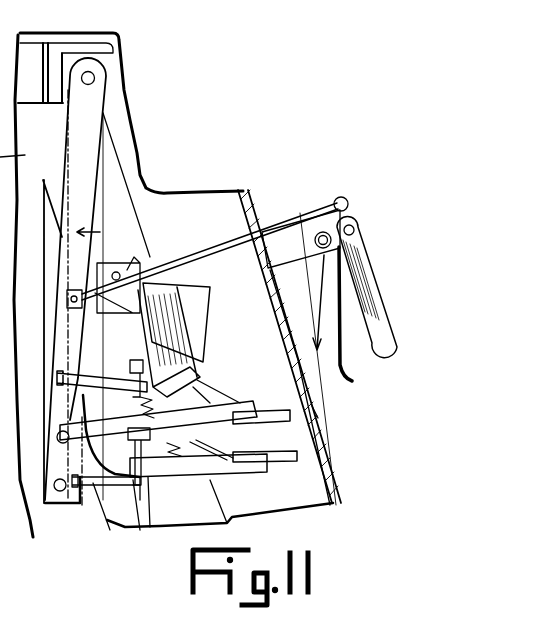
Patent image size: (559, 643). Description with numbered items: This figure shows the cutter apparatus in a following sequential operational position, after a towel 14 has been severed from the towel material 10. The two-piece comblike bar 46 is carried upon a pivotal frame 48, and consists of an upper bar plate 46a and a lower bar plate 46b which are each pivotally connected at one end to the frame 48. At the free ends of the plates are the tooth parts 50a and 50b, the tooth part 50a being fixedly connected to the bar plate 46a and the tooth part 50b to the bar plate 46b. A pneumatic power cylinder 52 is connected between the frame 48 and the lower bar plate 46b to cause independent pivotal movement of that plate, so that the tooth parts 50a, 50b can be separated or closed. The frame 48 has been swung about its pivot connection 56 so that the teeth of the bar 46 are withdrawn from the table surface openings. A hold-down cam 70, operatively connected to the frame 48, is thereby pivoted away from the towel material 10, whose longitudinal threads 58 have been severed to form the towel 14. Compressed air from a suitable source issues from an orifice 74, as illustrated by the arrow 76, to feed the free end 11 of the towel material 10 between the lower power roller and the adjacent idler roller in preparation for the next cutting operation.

The towel material 10 is at (300, 287).
The free end 11 is at (320, 420).
The towel 14 is at (335, 483).
The comblike bar 46 is at (176, 486).
The bar plate 46a is at (240, 403).
The bar plate 46b is at (240, 473).
The pivotal frame 48 is at (65, 268).
The tooth part 50a is at (262, 418).
The tooth part 50b is at (290, 460).
The pneumatic power cylinder 52 is at (165, 313).
The pivot connection 56 is at (95, 77).
The longitudinal threads 58 is at (316, 412).
The hold-down cam 70 is at (352, 372).
The orifice 74 is at (316, 243).
The arrow 76 is at (300, 302).